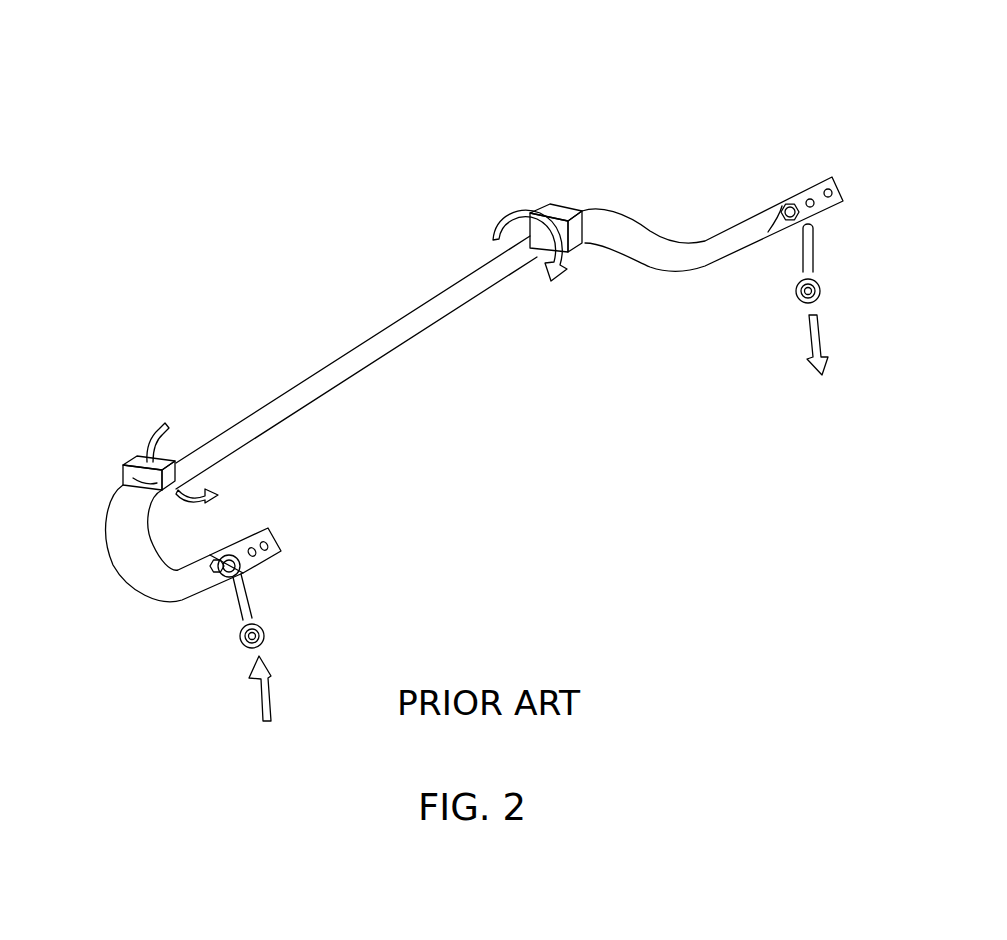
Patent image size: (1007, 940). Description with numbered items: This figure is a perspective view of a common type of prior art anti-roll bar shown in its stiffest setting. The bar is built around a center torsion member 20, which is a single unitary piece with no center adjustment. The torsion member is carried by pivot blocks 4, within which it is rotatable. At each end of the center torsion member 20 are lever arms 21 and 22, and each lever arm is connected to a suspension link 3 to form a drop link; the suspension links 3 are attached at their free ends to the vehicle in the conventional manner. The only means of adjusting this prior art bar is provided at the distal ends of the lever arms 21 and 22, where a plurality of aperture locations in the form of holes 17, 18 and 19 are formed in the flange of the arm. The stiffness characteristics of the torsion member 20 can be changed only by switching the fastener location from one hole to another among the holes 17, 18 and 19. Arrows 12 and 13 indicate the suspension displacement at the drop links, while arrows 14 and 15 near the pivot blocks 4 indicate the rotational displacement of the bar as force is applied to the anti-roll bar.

The suspension link 3 is at (472, 483).
The pivot block 4 is at (322, 293).
The arrow 12 is at (765, 382).
The arrow 13 is at (334, 664).
The arrow 14 is at (450, 212).
The arrow 15 is at (140, 401).
The hole 17 is at (693, 147).
The hole 18 is at (735, 122).
The hole 19 is at (782, 102).
The center torsion member 20 is at (347, 348).
The lever arm 21 is at (168, 595).
The lever arm 22 is at (710, 249).